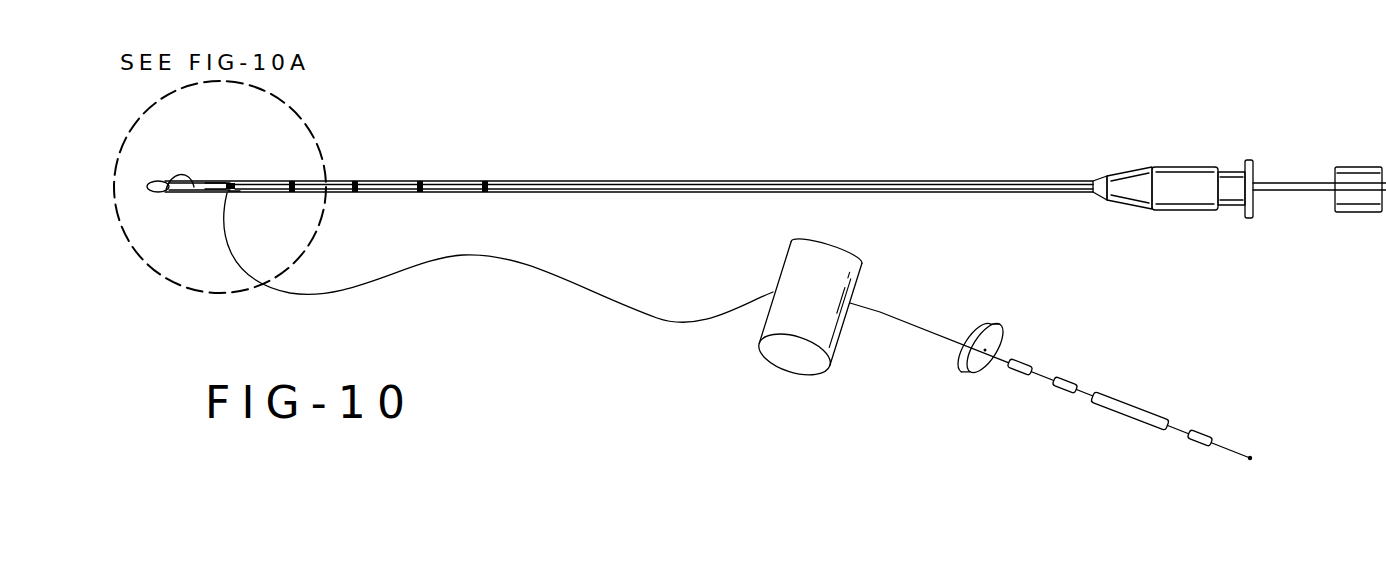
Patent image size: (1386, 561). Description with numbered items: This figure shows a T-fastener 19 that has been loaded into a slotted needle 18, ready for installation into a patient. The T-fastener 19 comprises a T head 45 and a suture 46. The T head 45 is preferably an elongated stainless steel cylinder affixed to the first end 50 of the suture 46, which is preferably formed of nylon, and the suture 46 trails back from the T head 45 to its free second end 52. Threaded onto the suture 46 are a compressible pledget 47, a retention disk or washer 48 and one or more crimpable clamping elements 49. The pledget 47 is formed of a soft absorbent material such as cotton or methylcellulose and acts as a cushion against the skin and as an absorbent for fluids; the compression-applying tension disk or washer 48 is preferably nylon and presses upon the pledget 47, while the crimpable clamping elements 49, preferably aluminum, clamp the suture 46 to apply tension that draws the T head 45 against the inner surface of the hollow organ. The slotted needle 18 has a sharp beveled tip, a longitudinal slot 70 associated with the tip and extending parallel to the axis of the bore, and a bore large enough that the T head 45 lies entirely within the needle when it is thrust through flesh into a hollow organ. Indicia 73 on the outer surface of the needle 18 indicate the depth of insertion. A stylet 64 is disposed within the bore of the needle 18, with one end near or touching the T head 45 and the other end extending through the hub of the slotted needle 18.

The slotted needle 18 is at (664, 180).
The T-fastener 19 is at (656, 386).
The T head 45 is at (215, 184).
The suture 46 is at (645, 318).
The compressible pledget 47 is at (788, 360).
The retention disk or washer 48 is at (968, 372).
The crimpable clamping elements 49 is at (1065, 378).
The first end 50 is at (233, 189).
The second end 52 is at (1238, 452).
The stylet 64 is at (1353, 167).
The longitudinal slot 70 is at (170, 191).
The indicia 73 is at (293, 181).